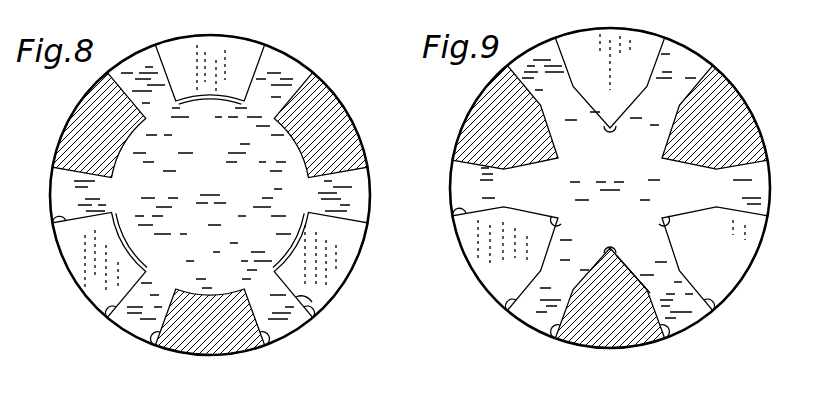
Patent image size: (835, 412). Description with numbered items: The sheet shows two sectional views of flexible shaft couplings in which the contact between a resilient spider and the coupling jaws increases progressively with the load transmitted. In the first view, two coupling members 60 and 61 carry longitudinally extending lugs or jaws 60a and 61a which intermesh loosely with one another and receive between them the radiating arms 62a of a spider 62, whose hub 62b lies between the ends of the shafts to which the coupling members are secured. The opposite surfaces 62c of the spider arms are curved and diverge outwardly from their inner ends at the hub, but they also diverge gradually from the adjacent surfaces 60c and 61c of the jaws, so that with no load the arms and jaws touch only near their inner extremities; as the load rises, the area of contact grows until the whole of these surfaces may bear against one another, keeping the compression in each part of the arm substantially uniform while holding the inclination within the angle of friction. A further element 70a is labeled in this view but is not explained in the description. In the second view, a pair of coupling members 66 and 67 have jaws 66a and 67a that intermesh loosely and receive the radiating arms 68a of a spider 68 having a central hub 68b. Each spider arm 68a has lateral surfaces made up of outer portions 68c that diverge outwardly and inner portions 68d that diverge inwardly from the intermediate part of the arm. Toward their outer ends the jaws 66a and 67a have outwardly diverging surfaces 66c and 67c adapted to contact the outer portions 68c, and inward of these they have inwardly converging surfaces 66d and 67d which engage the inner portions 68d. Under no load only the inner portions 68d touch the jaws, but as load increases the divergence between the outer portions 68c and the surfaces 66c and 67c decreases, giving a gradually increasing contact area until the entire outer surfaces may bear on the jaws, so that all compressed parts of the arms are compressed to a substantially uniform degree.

In FIG. 8, the coupling member 60 is at (85, 300).
In FIG. 8, the lugs or jaws 60a is at (220, 43).
In FIG. 8, the jaw surfaces 60c is at (52, 218).
In FIG. 8, the coupling member 61 is at (343, 109).
In FIG. 8, the lugs or jaws 61a is at (88, 113).
In FIG. 8, the jaw surfaces 61c is at (160, 345).
In FIG. 8, the spider 62 is at (212, 198).
In FIG. 8, the radiating arms 62a is at (128, 66).
In FIG. 8, the hub 62b is at (220, 206).
In FIG. 8, the opposite surfaces of spider arms 62c is at (300, 298).
In FIG. 8, the shaft 70a is at (196, 411).
In FIG. 9, the coupling member 66 is at (738, 267).
In FIG. 9, the jaws 66a is at (508, 296).
In FIG. 9, the outwardly diverging surfaces 66c is at (455, 213).
In FIG. 9, the inwardly converging surfaces 66d is at (616, 126).
In FIG. 9, the coupling member 67 is at (742, 109).
In FIG. 9, the jaws 67a is at (607, 341).
In FIG. 9, the outwardly diverging surfaces 67c is at (577, 320).
In FIG. 9, the inwardly converging surfaces 67d is at (616, 252).
In FIG. 9, the spider 68 is at (613, 193).
In FIG. 9, the radiating arms 68a is at (755, 186).
In FIG. 9, the central hub 68b is at (622, 200).
In FIG. 9, the outer portions 68c is at (728, 306).
In FIG. 9, the inner portions 68d is at (664, 247).